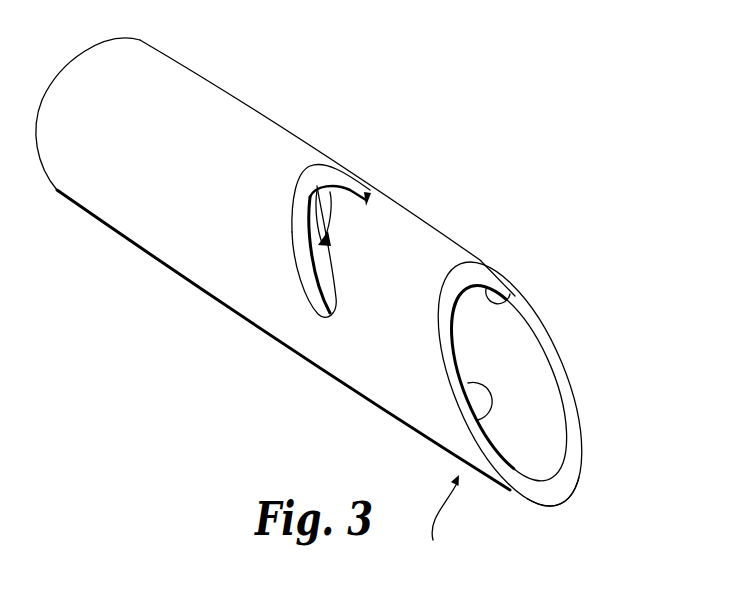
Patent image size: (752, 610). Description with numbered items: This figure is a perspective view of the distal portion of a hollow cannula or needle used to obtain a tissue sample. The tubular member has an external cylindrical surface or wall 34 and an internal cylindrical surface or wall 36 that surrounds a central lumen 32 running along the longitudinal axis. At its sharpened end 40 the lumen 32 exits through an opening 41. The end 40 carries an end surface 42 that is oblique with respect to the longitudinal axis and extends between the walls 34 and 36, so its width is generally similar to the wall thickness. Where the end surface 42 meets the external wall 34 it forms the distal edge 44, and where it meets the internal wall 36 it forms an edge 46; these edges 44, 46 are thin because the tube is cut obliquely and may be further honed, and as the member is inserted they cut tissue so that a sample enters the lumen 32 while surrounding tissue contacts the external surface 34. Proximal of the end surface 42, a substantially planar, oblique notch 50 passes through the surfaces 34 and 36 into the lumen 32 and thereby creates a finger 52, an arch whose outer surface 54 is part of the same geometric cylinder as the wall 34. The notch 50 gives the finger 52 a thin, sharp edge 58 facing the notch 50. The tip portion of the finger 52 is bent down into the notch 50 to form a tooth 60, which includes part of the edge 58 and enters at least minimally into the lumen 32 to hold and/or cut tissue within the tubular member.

The central lumen 32 is at (513, 375).
The external cylindrical surface or wall 34 is at (197, 103).
The internal cylindrical surface or wall 36 is at (473, 420).
The end 40 is at (436, 520).
The opening 41 is at (552, 453).
The end surface 42 is at (477, 274).
The distal edge 44 is at (538, 508).
The edge 46 is at (508, 302).
The notch 50 is at (322, 283).
The finger 52 is at (370, 198).
The outer surface 54 is at (372, 227).
The edge 58 is at (317, 244).
The tooth 60 is at (322, 178).